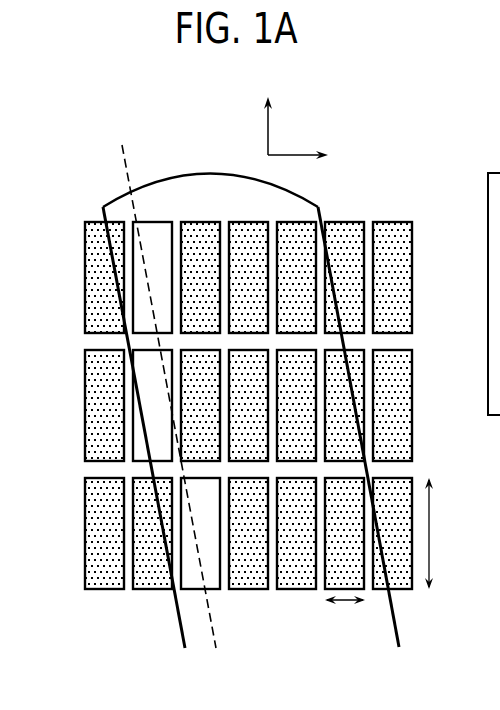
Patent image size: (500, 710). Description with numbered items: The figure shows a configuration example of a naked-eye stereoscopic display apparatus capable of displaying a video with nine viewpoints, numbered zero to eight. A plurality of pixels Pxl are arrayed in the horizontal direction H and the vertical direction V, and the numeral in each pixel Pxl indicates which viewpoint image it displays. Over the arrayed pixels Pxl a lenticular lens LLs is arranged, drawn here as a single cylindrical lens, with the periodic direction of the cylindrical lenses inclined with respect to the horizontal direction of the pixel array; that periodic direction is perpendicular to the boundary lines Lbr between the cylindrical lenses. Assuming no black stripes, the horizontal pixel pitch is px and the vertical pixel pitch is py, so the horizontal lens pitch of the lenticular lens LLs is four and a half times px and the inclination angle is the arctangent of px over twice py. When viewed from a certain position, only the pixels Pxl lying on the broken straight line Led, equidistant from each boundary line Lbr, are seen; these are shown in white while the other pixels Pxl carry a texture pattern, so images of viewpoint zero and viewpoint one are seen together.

The pixels Pxl is at (393, 223).
The lenticular lens LLs is at (203, 186).
The boundary lines Lbr is at (180, 622).
The straight line Led is at (123, 163).
The pixel pitch in the vertical direction py is at (444, 533).
The pixel pitch in the horizontal direction px is at (345, 614).
The vertical direction V is at (268, 110).
The horizontal direction H is at (309, 155).